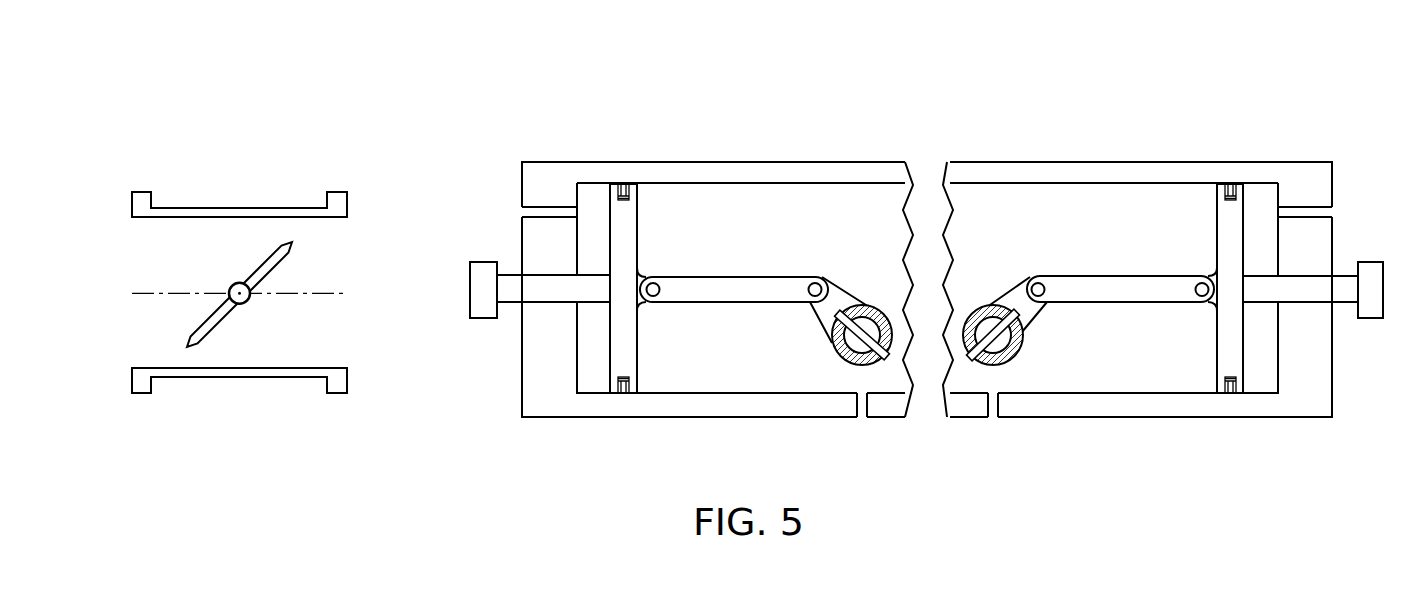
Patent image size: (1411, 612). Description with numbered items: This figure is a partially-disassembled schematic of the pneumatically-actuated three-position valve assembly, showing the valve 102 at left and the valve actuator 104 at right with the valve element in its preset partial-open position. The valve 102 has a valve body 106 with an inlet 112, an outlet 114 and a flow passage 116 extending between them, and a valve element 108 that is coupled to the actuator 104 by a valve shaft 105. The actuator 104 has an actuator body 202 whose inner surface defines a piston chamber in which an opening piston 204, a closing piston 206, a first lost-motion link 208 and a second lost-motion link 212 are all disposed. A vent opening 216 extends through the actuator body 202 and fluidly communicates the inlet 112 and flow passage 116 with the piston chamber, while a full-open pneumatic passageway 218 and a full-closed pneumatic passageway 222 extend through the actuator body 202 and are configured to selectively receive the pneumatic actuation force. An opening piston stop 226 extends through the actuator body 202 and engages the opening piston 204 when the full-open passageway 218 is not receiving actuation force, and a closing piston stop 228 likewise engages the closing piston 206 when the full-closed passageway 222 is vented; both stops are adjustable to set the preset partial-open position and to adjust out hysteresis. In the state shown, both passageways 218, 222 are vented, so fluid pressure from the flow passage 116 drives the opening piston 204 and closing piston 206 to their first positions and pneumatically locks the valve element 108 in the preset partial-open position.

The valve 102 is at (143, 143).
The valve actuator 104 is at (507, 165).
The valve shaft 105 is at (239, 288).
The valve body 106 is at (218, 210).
The valve element 108 is at (270, 278).
The inlet 112 is at (337, 242).
The outlet 114 is at (145, 287).
The flow passage 116 is at (275, 353).
The actuator body 202 is at (733, 162).
The opening piston 204 is at (637, 248).
The closing piston 206 is at (1217, 230).
The first lost-motion link 208 is at (873, 301).
The second lost-motion link 212 is at (997, 290).
The vent opening 216 is at (860, 417).
The full-open pneumatic passageway 218 is at (526, 213).
The full-closed pneumatic passageway 222 is at (1323, 213).
The opening piston stop 226 is at (470, 290).
The closing piston stop 228 is at (1372, 320).